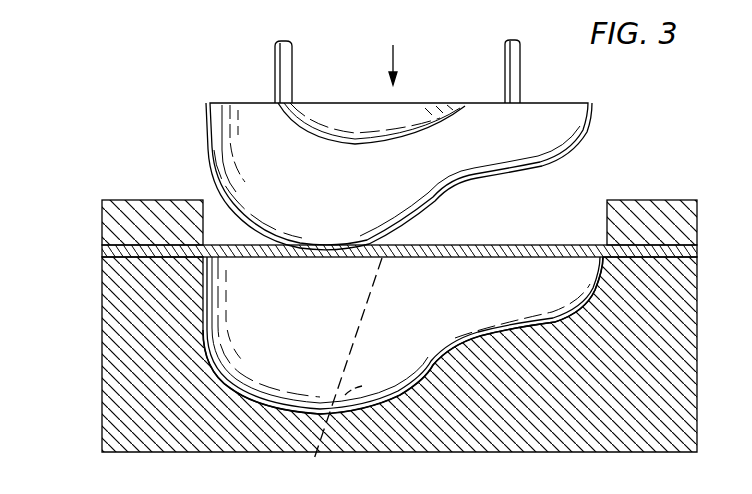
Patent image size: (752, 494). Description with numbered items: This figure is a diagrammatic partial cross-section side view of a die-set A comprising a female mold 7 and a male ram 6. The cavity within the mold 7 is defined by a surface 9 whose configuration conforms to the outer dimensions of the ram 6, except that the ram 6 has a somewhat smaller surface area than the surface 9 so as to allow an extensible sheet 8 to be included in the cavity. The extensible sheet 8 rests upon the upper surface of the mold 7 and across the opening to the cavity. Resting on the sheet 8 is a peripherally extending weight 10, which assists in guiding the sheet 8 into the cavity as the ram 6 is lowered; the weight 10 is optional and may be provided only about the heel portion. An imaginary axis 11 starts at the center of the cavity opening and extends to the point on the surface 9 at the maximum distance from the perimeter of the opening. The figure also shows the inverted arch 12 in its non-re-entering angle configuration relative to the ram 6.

The male ram 6 is at (243, 133).
The female mold 7 is at (118, 385).
The extensible sheet 8 is at (546, 245).
The surface 9 is at (437, 362).
The peripherally extending weight 10 is at (100, 222).
The imaginary axis 11 is at (343, 373).
The inverted arch 12 is at (418, 106).
The die-set A is at (590, 125).